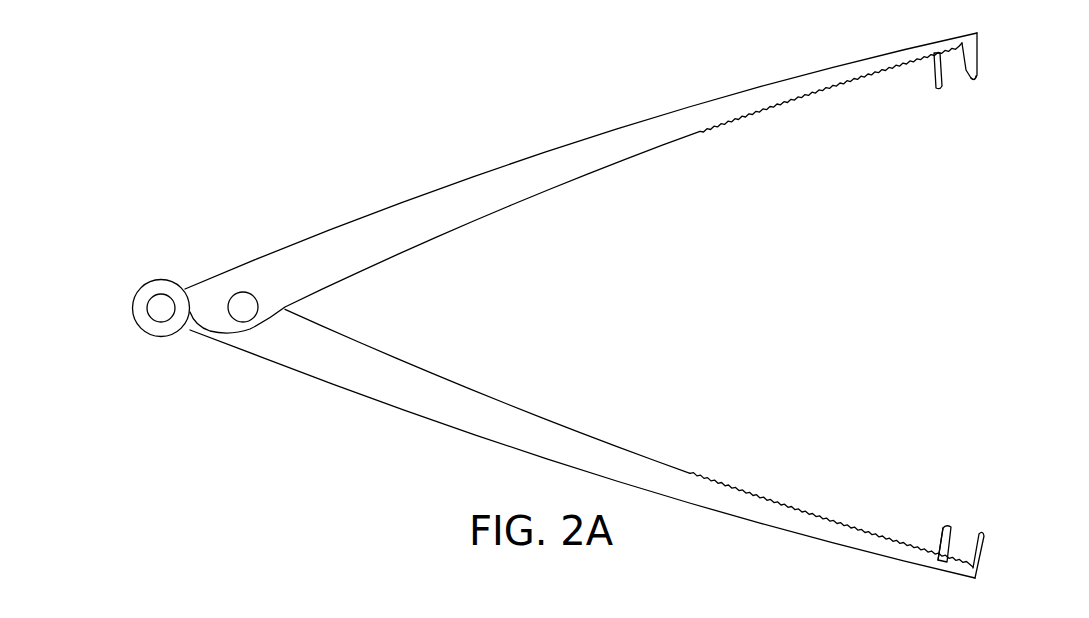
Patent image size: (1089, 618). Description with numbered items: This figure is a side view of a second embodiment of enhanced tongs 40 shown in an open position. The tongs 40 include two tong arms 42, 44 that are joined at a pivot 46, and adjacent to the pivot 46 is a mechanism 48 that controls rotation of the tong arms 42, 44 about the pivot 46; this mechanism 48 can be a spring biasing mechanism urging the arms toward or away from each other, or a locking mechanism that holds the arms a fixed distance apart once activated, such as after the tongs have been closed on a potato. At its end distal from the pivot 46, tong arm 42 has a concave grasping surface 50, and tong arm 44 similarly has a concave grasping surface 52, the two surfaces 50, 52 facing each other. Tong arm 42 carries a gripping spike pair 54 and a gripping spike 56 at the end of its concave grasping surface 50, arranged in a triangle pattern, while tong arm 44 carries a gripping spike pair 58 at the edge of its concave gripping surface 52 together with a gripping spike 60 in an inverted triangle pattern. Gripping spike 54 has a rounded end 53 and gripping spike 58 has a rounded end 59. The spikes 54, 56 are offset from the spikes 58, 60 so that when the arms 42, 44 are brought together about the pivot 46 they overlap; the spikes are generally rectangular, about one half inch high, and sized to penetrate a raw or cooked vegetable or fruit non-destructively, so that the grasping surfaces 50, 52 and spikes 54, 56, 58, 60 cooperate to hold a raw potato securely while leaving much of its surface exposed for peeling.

The tongs 40 is at (581, 306).
The tong arm 42 is at (598, 440).
The tong arm 44 is at (533, 155).
The pivot 46 is at (232, 318).
The mechanism 48 is at (160, 283).
The concave grasping surface 50 is at (802, 509).
The concave grasping surface 52 is at (798, 100).
The rounded end 53 is at (952, 528).
The gripping spike pair 54 is at (938, 552).
The gripping spike 56 is at (985, 556).
The gripping spike pair 58 is at (979, 66).
The rounded end 59 is at (978, 80).
The gripping spike 60 is at (935, 68).